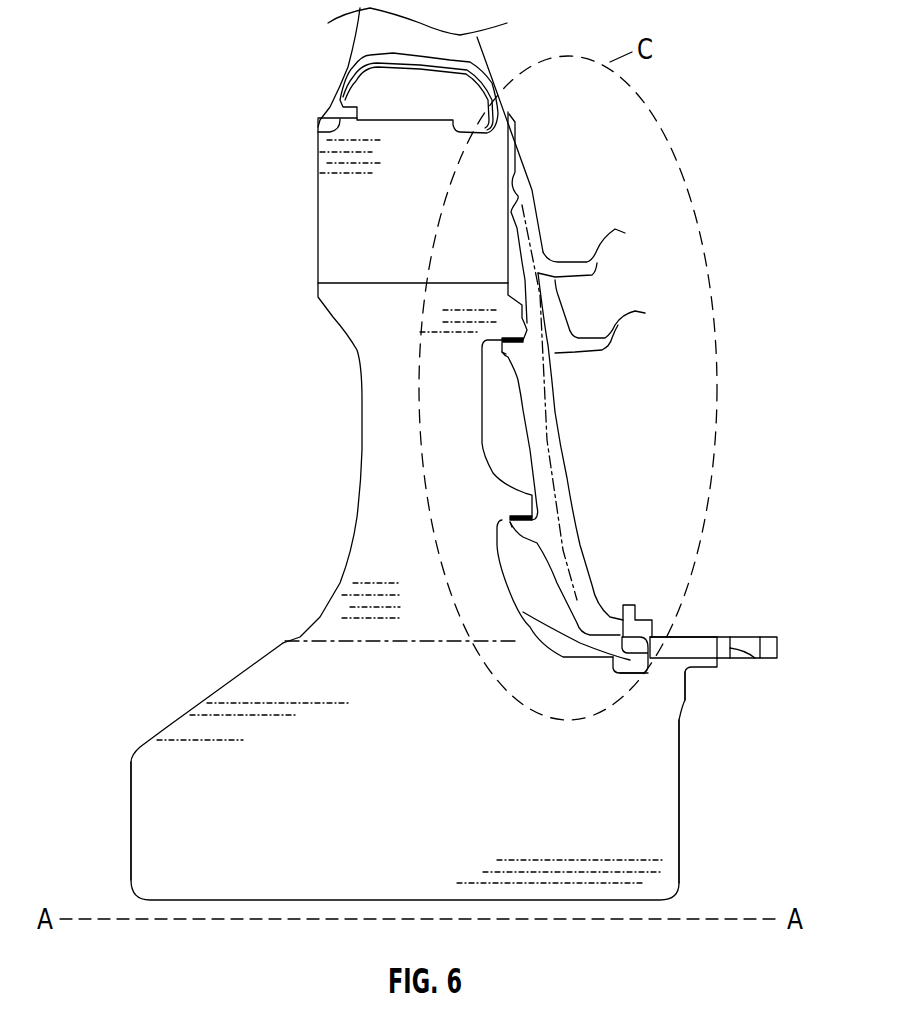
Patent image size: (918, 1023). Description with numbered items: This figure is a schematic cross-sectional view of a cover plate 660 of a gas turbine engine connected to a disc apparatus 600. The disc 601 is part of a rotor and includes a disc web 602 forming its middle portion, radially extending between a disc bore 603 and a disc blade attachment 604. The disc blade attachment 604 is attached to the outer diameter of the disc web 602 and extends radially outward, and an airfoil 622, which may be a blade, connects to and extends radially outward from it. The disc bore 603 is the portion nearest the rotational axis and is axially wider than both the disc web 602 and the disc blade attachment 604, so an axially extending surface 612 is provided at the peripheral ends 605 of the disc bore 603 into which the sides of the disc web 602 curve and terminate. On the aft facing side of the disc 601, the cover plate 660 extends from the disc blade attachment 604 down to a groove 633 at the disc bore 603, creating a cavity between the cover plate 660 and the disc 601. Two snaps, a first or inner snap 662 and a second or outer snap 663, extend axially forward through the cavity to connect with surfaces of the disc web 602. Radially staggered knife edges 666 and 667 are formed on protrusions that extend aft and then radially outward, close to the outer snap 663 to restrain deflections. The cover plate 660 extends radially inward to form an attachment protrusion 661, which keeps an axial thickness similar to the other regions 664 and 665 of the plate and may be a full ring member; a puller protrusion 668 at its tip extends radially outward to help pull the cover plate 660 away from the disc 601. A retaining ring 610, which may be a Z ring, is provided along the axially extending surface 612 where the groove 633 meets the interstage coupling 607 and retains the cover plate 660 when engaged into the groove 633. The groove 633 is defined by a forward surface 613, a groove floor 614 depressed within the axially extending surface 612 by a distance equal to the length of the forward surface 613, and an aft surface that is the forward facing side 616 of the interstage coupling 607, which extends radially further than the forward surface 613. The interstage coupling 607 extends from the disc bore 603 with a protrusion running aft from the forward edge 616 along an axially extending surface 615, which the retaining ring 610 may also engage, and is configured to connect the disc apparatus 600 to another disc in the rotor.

The disc apparatus 600 is at (183, 283).
The disc 601 is at (360, 470).
The disc web 602 is at (405, 286).
The disc bore 603 is at (378, 787).
The disc blade attachment 604 is at (380, 224).
The peripheral ends 605 is at (131, 823).
The interstage coupling 607 is at (745, 655).
The retaining ring 610 is at (653, 637).
The axially extending surface 612 is at (553, 640).
The forward surface 613 is at (612, 663).
The groove floor 614 is at (632, 672).
The axially extending surface 615 is at (700, 637).
The forward facing side 616 is at (680, 690).
The airfoil 622 is at (330, 68).
The groove 633 is at (523, 611).
The cover plate 660 is at (518, 436).
The attachment protrusion 661 is at (574, 556).
The first snap 662 is at (533, 532).
The second snap 663 is at (520, 353).
The region of the cover plate 664 is at (557, 457).
The region of the cover plate 665 is at (556, 279).
The first knife edge 666 is at (621, 316).
The second knife edge 667 is at (604, 239).
The puller protrusion 668 is at (627, 605).